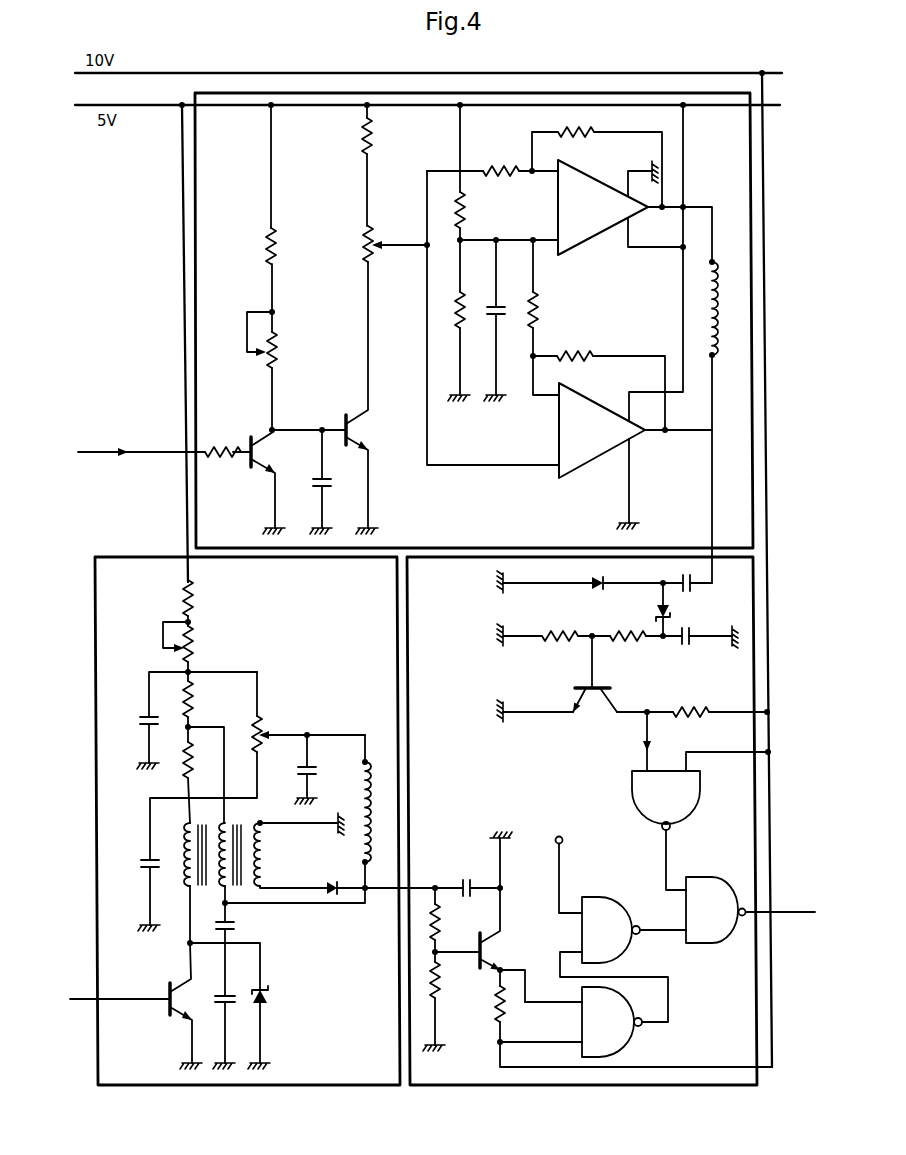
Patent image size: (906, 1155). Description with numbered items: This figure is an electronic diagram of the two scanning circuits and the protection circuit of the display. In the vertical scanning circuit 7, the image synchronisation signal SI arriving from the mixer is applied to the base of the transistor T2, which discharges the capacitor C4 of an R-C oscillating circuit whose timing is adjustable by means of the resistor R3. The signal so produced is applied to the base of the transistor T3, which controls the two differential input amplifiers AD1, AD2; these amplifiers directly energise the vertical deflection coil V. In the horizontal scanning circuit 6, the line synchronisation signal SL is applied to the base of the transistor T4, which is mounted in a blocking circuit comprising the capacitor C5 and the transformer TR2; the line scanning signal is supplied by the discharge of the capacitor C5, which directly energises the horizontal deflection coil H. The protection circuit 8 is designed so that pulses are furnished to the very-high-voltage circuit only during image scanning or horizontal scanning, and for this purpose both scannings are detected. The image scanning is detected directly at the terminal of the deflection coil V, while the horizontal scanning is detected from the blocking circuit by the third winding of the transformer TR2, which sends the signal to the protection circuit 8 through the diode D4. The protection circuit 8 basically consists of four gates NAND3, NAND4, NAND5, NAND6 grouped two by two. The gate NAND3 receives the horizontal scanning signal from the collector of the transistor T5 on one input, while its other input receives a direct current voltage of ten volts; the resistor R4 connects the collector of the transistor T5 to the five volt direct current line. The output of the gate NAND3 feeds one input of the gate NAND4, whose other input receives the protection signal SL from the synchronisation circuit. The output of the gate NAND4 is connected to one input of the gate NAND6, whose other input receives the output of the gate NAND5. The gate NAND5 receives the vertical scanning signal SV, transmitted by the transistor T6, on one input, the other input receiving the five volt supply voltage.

The horizontal scanning circuit 6 is at (132, 609).
The vertical scanning circuit 7 is at (740, 468).
The protection circuit 8 is at (737, 682).
The resistor R3 is at (275, 340).
The transistor T2 is at (269, 483).
The transistor T3 is at (368, 398).
The capacitor C4 is at (330, 482).
The differential input amplifier AD1 is at (614, 207).
The differential input amplifier AD2 is at (602, 456).
The vertical deflection coil V is at (718, 300).
The horizontal deflection coil H is at (375, 800).
The transformer TR2 is at (208, 846).
The diode D4 is at (332, 877).
The capacitor C5 is at (238, 927).
The transistor T4 is at (191, 1006).
The transistor T6 is at (595, 683).
The transistor T5 is at (501, 901).
The resistor R4 is at (487, 1004).
The NAND gate NAND3 is at (634, 1024).
The NAND gate NAND4 is at (610, 920).
The NAND gate NAND5 is at (632, 800).
The NAND gate NAND6 is at (716, 921).